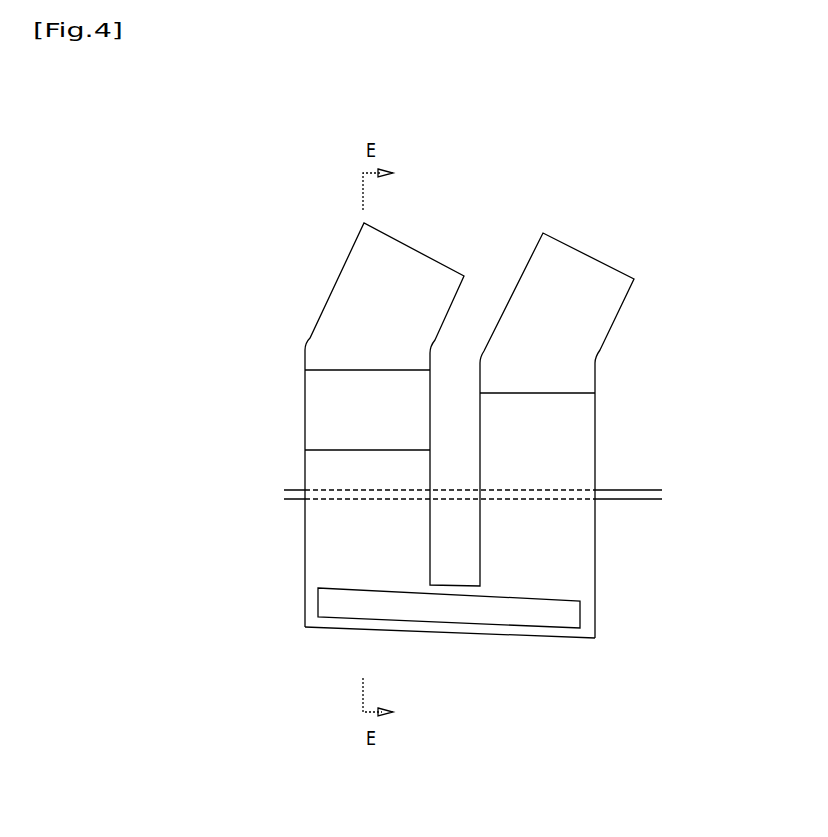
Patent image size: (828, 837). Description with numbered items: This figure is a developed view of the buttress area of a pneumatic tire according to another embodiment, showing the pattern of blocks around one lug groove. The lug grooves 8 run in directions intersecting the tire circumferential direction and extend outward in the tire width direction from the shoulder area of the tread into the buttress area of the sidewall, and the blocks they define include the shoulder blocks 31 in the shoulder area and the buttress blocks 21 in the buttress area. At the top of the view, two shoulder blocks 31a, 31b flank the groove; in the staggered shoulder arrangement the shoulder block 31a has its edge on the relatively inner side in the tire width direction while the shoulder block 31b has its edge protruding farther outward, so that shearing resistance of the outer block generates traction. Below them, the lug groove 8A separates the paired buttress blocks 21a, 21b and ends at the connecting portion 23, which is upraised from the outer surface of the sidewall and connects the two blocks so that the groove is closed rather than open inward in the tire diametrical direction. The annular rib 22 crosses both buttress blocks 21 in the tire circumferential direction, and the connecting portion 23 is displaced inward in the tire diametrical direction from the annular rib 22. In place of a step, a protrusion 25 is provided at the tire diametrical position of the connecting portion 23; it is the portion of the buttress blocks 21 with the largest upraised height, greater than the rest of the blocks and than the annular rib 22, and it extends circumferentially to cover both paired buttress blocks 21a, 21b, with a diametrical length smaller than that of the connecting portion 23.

The shoulder blocks 31 is at (481, 280).
The shoulder blocks having edges on relatively inner sides 31a is at (343, 257).
The shoulder blocks having edges on relatively outer sides 31b is at (597, 258).
The lug grooves 8 is at (470, 399).
The lug grooves ending at connecting portions 8A is at (478, 313).
The buttress blocks 21 is at (449, 518).
The buttress block 21a is at (305, 573).
The buttress block 21b is at (595, 588).
The annular rib 22 is at (637, 487).
The connecting portion 23 is at (453, 633).
The protrusion 25 is at (347, 618).